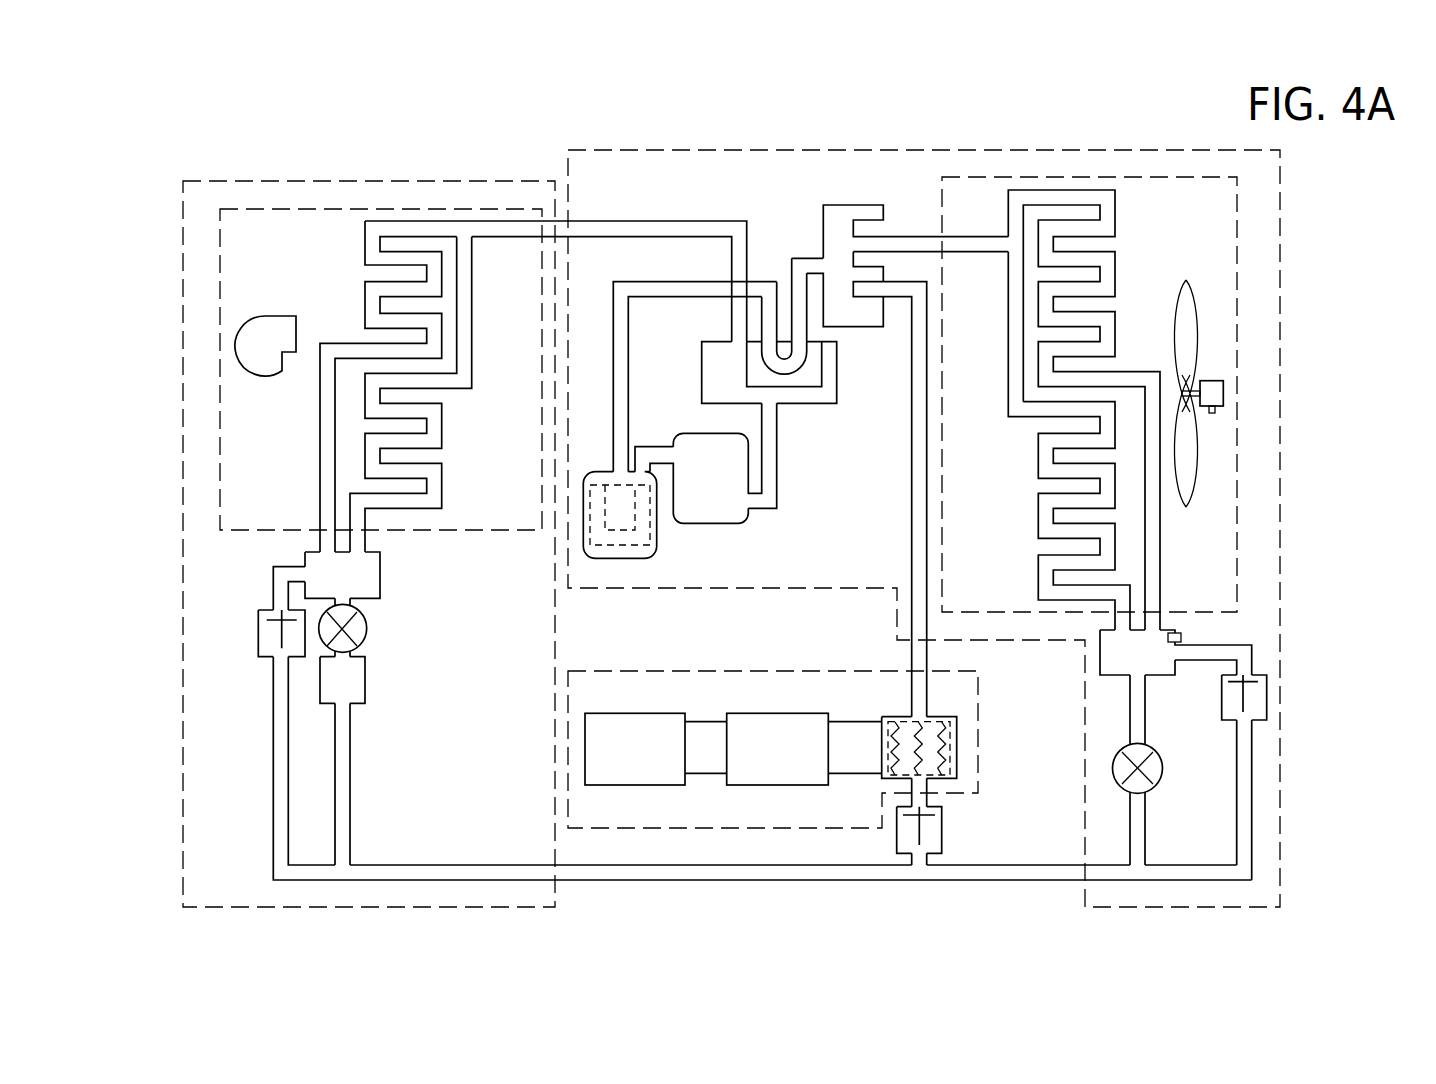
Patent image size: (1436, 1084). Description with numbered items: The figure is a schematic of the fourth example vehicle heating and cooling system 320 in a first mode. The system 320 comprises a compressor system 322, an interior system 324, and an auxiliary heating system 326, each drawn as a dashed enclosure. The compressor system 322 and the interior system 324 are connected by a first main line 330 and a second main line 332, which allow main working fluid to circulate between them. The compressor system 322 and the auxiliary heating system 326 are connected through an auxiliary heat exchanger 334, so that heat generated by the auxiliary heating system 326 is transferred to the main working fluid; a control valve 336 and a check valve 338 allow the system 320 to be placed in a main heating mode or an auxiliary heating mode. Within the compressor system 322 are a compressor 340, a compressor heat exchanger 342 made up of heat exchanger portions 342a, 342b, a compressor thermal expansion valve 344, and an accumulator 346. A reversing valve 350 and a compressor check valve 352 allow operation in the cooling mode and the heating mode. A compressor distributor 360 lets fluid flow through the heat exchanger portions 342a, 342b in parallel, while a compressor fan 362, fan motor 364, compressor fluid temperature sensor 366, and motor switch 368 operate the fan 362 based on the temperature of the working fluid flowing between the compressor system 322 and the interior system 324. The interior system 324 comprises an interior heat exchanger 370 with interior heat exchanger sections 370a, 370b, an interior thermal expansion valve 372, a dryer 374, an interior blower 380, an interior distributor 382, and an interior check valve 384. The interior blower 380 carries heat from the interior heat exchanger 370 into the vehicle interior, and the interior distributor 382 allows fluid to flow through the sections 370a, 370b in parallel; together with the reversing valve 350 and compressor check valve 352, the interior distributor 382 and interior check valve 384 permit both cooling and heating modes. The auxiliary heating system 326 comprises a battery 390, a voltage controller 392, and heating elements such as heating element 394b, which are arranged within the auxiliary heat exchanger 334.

The fourth example vehicle heating and cooling system 320 is at (1305, 192).
The compressor system 322 is at (1272, 247).
The interior system 324 is at (352, 185).
The auxiliary heating system 326 is at (648, 670).
The first main line 330 is at (508, 228).
The second main line 332 is at (480, 873).
The auxiliary heat exchanger 334 is at (958, 760).
The control valve 336 is at (830, 227).
The check valve 338 is at (942, 836).
The compressor 340 is at (712, 517).
The compressor heat exchanger 342 is at (1175, 185).
The heat exchanger portion 342a is at (1120, 257).
The heat exchanger portion 342b is at (1035, 488).
The compressor thermal expansion valve 344 is at (1153, 773).
The accumulator 346 is at (642, 553).
The reversing valve 350 is at (708, 365).
The compressor check valve 352 is at (1262, 700).
The compressor distributor 360 is at (1112, 657).
The compressor fan 362 is at (1185, 337).
The fan motor 364 is at (1213, 388).
The compressor fluid temperature sensor 366 is at (1182, 638).
The motor switch 368 is at (1213, 412).
The interior heat exchanger 370 is at (277, 212).
The interior heat exchanger section 370a is at (360, 262).
The interior heat exchanger section 370b is at (447, 435).
The interior thermal expansion valve 372 is at (362, 630).
The dryer 374 is at (355, 680).
The interior blower 380 is at (270, 328).
The interior distributor 382 is at (375, 577).
The interior check valve 384 is at (263, 645).
The battery 390 is at (640, 778).
The voltage controller 392 is at (770, 778).
The heating element 394b is at (955, 738).